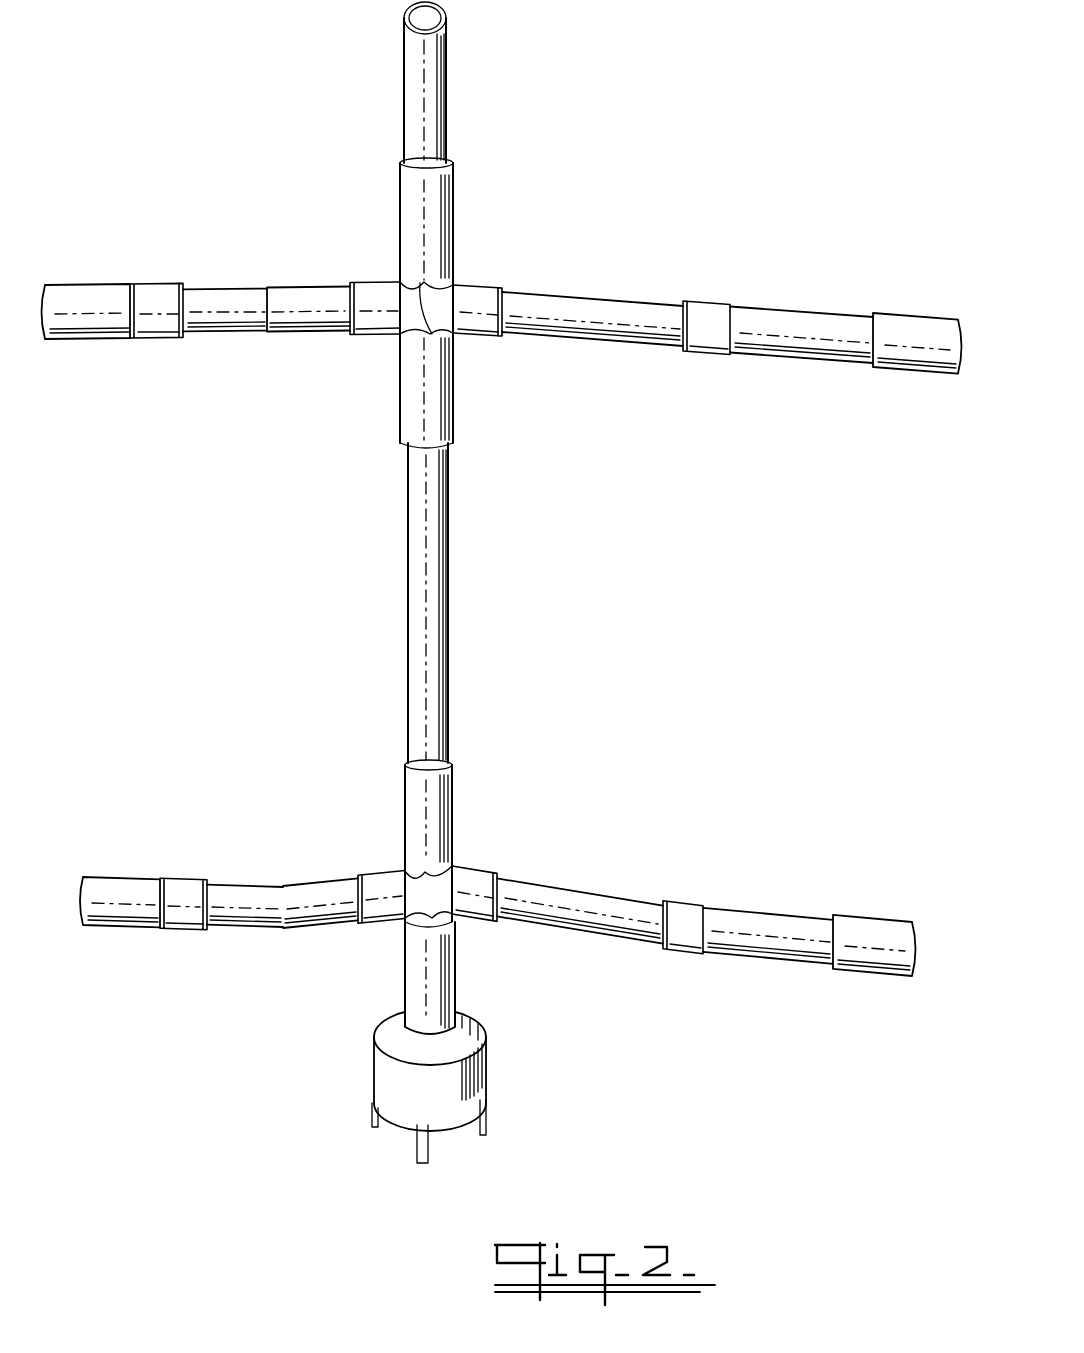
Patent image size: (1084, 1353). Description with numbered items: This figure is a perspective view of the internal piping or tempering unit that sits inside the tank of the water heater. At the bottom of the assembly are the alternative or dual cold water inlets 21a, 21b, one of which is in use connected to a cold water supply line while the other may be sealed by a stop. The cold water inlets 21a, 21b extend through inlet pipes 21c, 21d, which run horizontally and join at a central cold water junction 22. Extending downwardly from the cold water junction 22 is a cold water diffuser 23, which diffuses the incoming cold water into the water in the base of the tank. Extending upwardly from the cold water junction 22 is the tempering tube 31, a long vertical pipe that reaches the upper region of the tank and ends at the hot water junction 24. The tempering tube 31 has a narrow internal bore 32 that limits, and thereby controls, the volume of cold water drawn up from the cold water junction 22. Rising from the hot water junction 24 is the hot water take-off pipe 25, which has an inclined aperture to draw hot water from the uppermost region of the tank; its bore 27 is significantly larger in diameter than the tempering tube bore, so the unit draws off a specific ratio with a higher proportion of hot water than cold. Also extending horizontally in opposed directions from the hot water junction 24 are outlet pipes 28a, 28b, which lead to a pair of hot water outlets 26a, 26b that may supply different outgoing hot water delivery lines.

The cold water inlet 21a is at (150, 878).
The cold water inlet 21b is at (838, 919).
The inlet pipe 21c is at (240, 893).
The inlet pipe 21d is at (612, 906).
The cold water junction 22 is at (474, 847).
The cold water diffuser 23 is at (500, 1057).
The hot water junction 24 is at (466, 346).
The hot water take-off pipe 25 is at (466, 89).
The hot water outlet 26a is at (97, 339).
The hot water outlet 26b is at (899, 342).
The bore 27 is at (434, 138).
The outlet pipe 28a is at (253, 314).
The outlet pipe 28b is at (634, 318).
The tempering tube 31 is at (466, 633).
The internal bore 32 is at (442, 684).